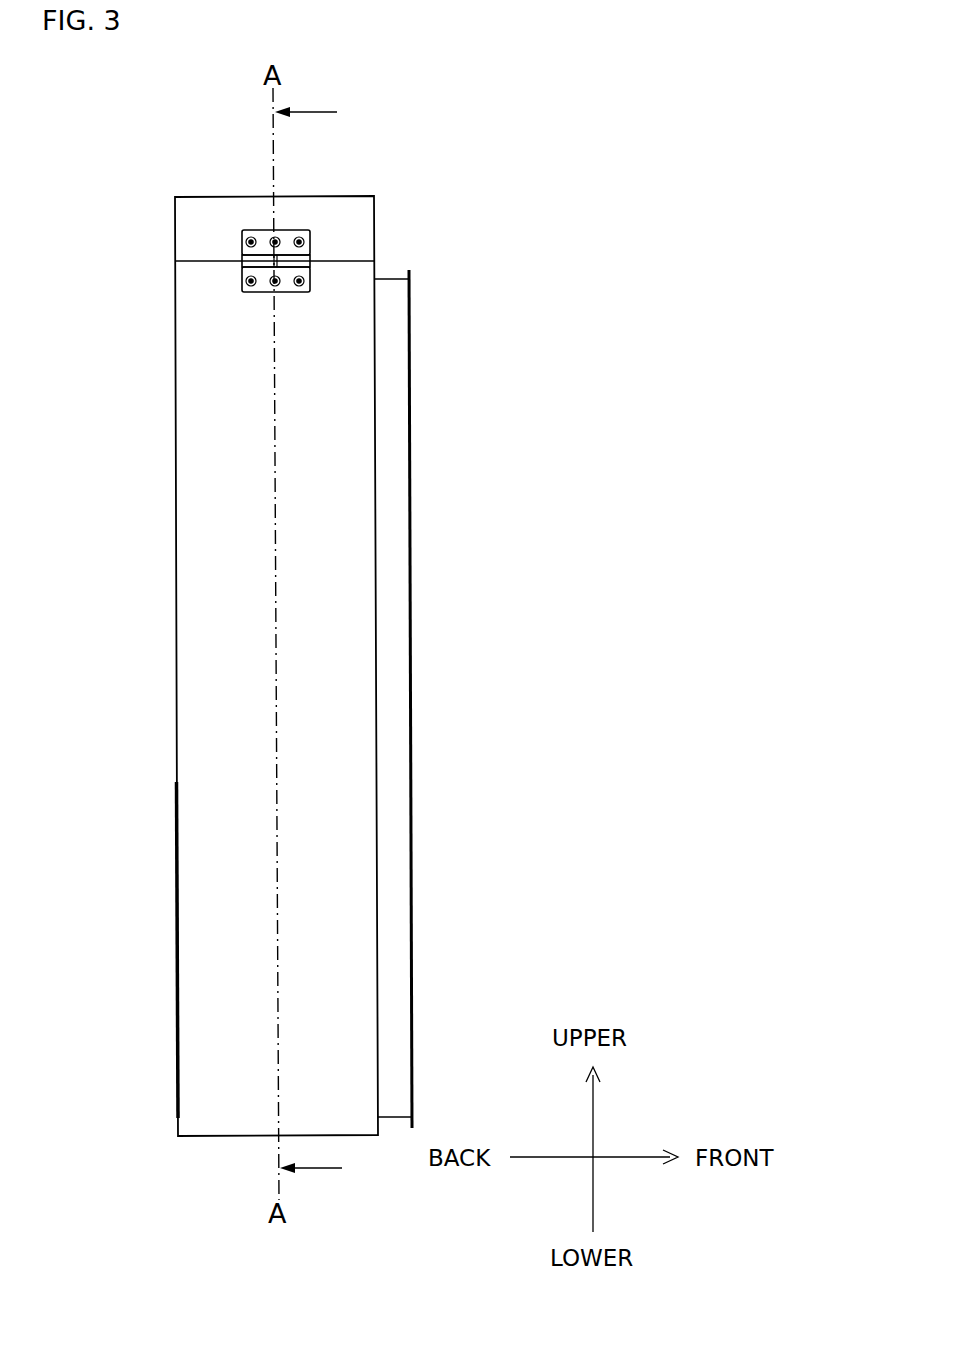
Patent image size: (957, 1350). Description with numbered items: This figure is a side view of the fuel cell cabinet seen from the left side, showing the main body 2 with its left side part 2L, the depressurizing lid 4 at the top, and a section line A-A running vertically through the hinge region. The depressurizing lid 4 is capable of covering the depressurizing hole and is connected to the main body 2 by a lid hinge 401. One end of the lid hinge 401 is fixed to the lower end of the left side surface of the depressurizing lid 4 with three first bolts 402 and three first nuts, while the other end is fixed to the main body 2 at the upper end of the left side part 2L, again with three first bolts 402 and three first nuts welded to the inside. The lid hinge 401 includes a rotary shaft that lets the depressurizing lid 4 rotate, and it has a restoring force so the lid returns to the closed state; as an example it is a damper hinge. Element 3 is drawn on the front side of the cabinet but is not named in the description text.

The main body 2 is at (150, 469).
The left side part 2L is at (200, 686).
The door 3 is at (432, 905).
The depressurizing lid 4 is at (284, 222).
The lid hinge 401 is at (310, 250).
The first bolt 402 is at (246, 242).